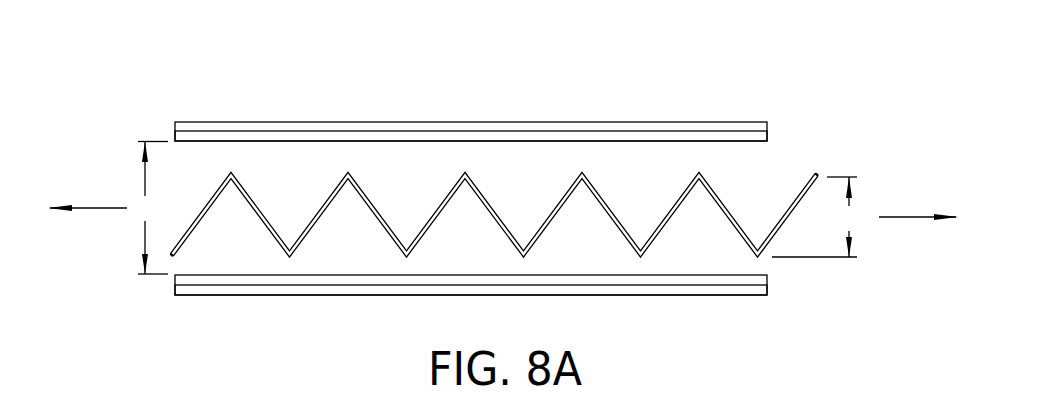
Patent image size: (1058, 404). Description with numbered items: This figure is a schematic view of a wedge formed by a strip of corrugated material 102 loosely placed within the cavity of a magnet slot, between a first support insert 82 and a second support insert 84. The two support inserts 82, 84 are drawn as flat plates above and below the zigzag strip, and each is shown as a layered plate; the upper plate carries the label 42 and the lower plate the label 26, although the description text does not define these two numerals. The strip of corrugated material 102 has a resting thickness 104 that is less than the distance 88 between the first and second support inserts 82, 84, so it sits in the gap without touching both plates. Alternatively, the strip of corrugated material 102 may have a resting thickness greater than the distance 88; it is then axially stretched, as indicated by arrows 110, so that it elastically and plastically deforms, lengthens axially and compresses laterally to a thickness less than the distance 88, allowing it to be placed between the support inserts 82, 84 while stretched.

The second facesheet 26 is at (471, 306).
The first facesheet 42 is at (471, 113).
The first support insert 82 is at (402, 138).
The second support insert 84 is at (540, 280).
The distance between the first and second support inserts 88 is at (150, 208).
The strip of corrugated material 102 is at (388, 208).
The resting thickness 104 is at (819, 217).
The arrows indicating axial stretching 110 is at (104, 208).